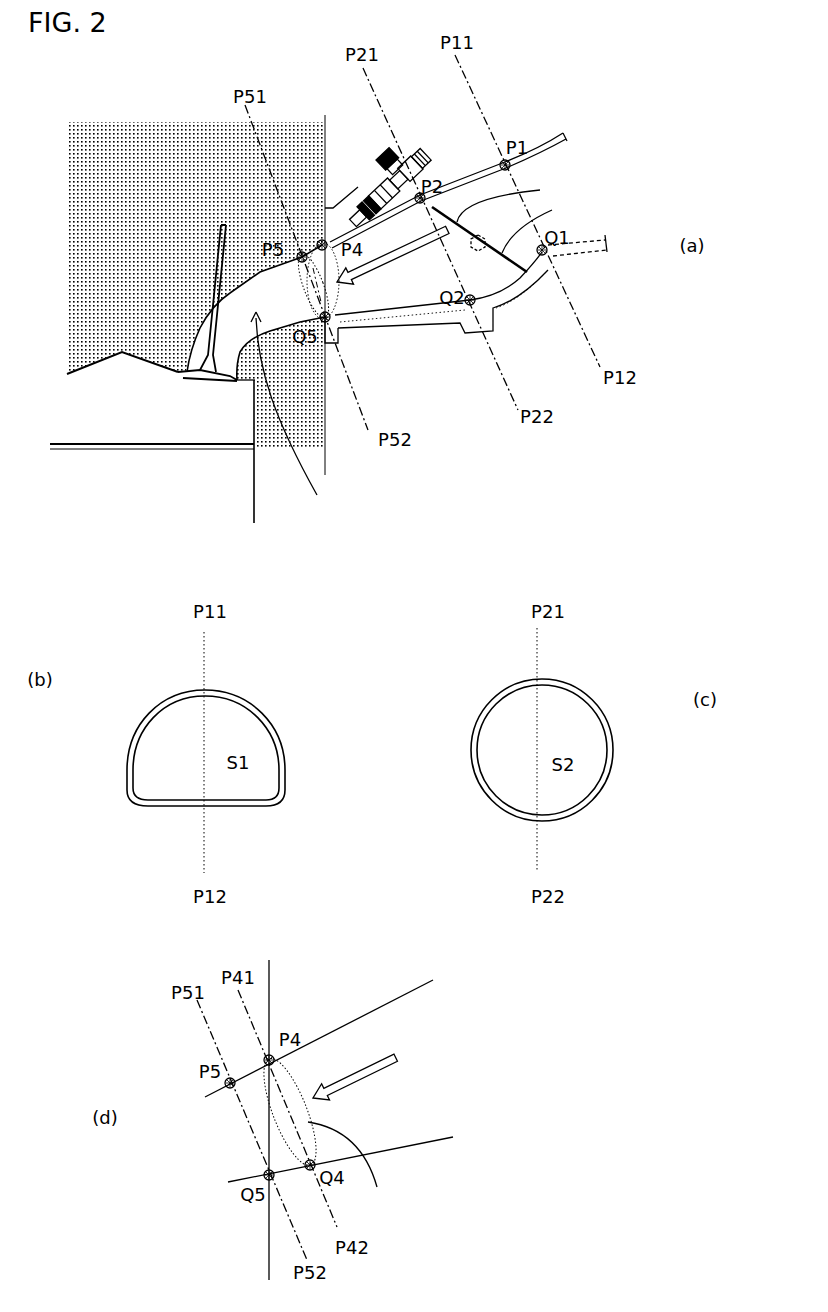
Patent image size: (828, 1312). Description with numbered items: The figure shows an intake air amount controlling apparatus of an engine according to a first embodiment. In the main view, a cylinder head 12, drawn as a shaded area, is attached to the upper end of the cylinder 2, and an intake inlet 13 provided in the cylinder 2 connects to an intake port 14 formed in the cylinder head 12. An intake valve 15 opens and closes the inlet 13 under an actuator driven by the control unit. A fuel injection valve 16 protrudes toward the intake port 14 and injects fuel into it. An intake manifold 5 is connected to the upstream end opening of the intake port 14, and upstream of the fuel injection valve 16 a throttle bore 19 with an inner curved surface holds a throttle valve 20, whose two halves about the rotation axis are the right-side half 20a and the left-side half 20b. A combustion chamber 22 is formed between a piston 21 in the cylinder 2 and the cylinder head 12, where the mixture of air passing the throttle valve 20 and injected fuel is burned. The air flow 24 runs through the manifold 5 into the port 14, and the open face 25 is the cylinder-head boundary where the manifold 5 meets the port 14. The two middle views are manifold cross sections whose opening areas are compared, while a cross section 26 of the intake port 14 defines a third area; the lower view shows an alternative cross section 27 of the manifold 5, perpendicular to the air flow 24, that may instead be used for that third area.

The cylinder 2 is at (255, 508).
The intake manifold 5 is at (420, 318).
The cylinder head 12 is at (212, 295).
The intake inlet 13 is at (202, 379).
The intake port 14 is at (297, 412).
The intake valve 15 is at (217, 250).
The fuel injection valve 16 is at (418, 147).
The throttle bore 19 is at (523, 285).
The throttle valve 20 is at (462, 238).
The right-side half of throttle valve 20a is at (528, 221).
The left-side half of throttle valve 20b is at (450, 190).
The piston 21 is at (132, 484).
The combustion chamber 22 is at (152, 430).
The air flow 24 is at (380, 664).
The open face 25 is at (337, 298).
The cross section of intake port 26 is at (295, 271).
The cross section of intake manifold 27 is at (353, 1168).